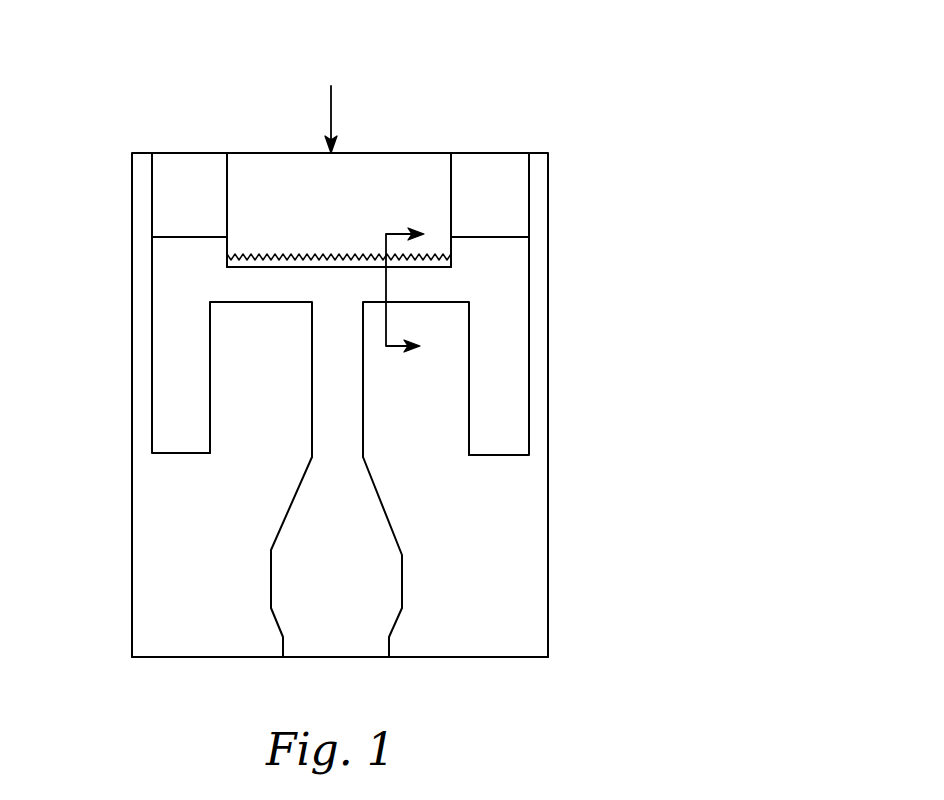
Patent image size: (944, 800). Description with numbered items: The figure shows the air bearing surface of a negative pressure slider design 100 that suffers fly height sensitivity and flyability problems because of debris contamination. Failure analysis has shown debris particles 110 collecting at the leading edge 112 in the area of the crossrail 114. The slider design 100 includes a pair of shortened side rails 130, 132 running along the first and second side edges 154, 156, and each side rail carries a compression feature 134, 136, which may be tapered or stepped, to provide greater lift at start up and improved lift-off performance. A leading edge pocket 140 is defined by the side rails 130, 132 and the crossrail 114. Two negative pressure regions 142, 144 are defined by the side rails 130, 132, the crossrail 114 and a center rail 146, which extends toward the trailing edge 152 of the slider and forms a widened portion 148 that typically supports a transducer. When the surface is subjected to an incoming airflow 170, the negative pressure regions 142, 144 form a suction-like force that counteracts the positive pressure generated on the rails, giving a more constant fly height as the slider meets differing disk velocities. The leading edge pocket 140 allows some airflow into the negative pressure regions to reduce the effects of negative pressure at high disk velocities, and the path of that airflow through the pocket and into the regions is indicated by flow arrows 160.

The slider design 100 is at (508, 69).
The debris particles 110 is at (318, 242).
The leading edge 112 is at (555, 213).
The crossrail 114 is at (462, 282).
The side rail 130 is at (160, 345).
The side rail 132 is at (508, 429).
The compression feature 134 is at (160, 185).
The compression feature 136 is at (510, 190).
The leading edge pocket 140 is at (425, 162).
The negative pressure region 142 is at (260, 433).
The negative pressure region 144 is at (428, 435).
The center rail 146 is at (318, 377).
The widened portion 148 is at (382, 578).
The trailing edge 152 is at (556, 641).
The first side edge 154 is at (130, 535).
The second side edge 156 is at (548, 530).
The flow direction arrows 160 is at (405, 358).
The incoming airflow 170 is at (329, 122).